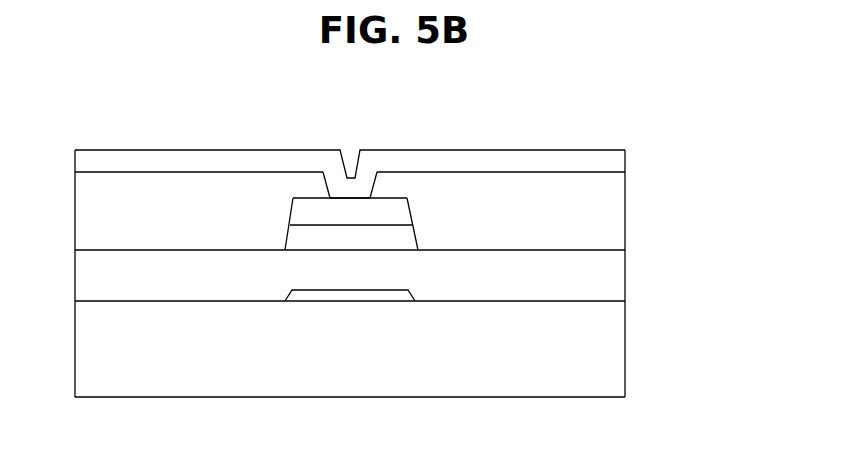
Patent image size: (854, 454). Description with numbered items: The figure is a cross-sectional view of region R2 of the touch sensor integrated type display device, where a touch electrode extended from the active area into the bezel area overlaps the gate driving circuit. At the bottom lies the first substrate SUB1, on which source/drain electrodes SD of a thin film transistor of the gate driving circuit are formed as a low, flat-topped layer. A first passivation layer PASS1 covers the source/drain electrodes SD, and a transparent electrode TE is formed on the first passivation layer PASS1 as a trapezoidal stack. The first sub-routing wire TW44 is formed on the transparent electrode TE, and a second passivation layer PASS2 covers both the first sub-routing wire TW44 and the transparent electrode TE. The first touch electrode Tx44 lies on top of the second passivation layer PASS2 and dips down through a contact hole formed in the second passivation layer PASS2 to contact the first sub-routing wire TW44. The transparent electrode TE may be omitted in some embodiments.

The region R2 is at (101, 110).
The first touch electrode Tx44 is at (157, 158).
The first sub-routing wire TW44 is at (307, 212).
The transparent electrode TE is at (392, 240).
The second passivation layer PASS2 is at (618, 210).
The first passivation layer PASS1 is at (618, 276).
The source/drain electrodes SD is at (345, 301).
The first substrate SUB1 is at (618, 350).